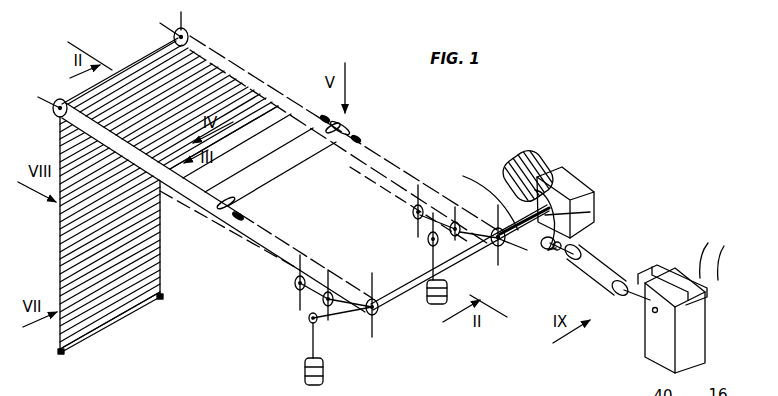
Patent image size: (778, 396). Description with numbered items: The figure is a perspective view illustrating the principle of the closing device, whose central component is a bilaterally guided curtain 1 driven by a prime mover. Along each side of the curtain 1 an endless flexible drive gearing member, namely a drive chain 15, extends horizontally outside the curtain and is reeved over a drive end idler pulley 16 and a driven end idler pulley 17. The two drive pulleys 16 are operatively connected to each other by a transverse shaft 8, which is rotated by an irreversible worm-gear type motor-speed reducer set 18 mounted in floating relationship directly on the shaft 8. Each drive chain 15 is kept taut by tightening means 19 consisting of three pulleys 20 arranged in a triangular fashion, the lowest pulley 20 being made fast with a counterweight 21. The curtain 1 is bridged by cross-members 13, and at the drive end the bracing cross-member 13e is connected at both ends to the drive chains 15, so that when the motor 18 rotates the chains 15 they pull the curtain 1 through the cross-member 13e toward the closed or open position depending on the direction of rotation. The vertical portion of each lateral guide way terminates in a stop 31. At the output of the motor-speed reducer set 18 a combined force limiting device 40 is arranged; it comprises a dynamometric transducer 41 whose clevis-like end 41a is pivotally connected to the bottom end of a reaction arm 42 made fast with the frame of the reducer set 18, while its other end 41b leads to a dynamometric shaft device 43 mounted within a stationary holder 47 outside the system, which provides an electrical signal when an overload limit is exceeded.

The curtain 1 is at (150, 88).
The transverse shaft 8 is at (474, 255).
The cross-member 13 is at (243, 139).
The drive end bracing cross-member 13e is at (297, 168).
The drive chain 15 is at (400, 160).
The drive end idler pulley 16 is at (375, 316).
The driven end idler pulley 17 is at (64, 101).
The motor-speed reducer set 18 is at (576, 178).
The tightening means 19 is at (304, 318).
The pulley 20 is at (294, 287).
The counterweight 21 is at (304, 372).
The stop 31 is at (162, 300).
The force limiting device 40 is at (563, 287).
The dynamometric transducer 41 is at (600, 265).
The clevis-like end 41a is at (488, 194).
The end of dynamometric transducer 41b is at (660, 280).
The reaction arm 42 is at (578, 210).
The dynamometric shaft device 43 is at (652, 312).
The stationary holder 47 is at (684, 336).